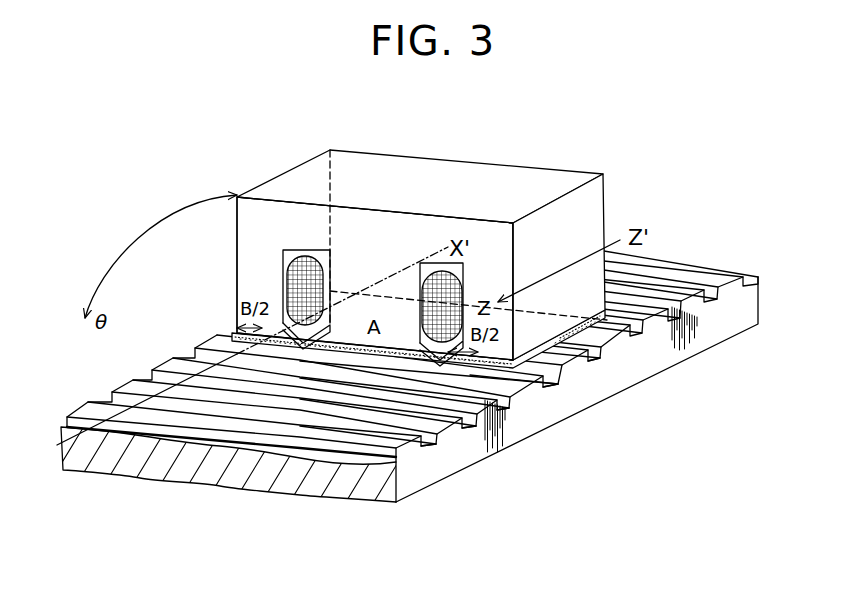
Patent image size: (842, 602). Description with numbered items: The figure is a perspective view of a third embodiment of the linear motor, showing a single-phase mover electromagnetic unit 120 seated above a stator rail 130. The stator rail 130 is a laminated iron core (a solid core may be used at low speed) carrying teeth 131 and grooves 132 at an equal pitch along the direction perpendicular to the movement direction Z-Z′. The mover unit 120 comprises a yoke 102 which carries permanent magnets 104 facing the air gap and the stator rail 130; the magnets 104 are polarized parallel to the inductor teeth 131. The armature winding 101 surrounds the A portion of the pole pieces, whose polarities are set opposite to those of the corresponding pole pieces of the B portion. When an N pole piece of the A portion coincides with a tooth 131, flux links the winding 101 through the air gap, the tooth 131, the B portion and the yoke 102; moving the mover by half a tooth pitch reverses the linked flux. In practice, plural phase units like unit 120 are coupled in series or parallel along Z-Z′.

The mover electromagnetic unit 120 is at (397, 157).
The yoke 102 is at (482, 170).
The armature winding 101 is at (300, 260).
The permanent magnets 104 is at (233, 337).
The stator rail 130 is at (710, 327).
The teeth 131 is at (610, 337).
The grooves 132 is at (557, 378).